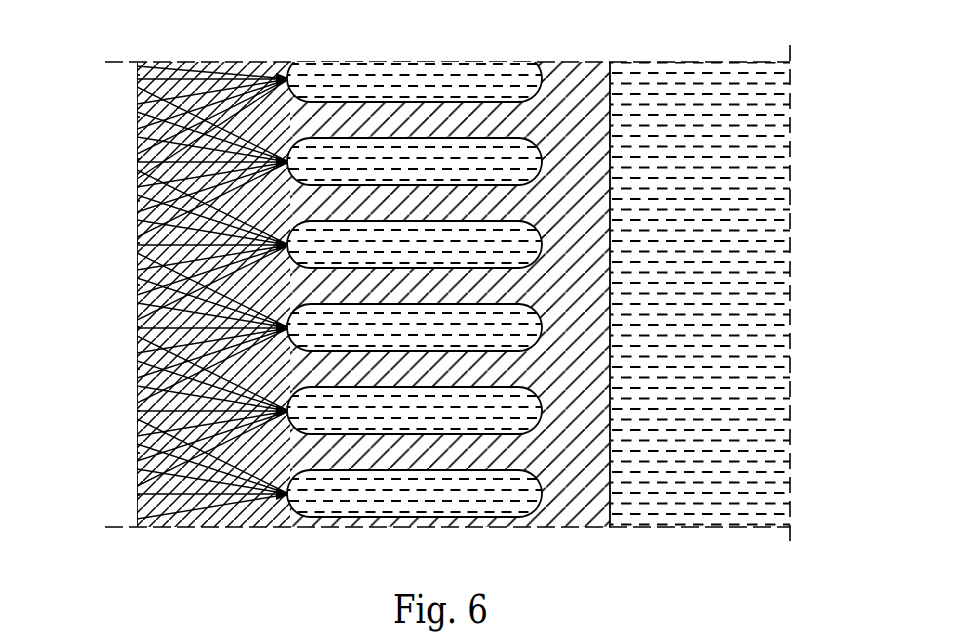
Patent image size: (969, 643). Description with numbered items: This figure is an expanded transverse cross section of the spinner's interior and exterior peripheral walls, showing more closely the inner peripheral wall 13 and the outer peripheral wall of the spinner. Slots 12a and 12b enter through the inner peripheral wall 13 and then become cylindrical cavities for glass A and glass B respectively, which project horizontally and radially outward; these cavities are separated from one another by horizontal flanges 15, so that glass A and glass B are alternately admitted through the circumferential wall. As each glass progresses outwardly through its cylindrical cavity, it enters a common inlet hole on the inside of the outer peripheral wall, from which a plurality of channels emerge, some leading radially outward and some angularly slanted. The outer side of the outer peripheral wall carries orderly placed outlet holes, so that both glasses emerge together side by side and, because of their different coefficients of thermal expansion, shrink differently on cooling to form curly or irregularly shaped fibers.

The slot 12a is at (597, 163).
The slot 12b is at (593, 240).
The inner peripheral wall 13 is at (597, 364).
The horizontal flange 15 is at (388, 447).